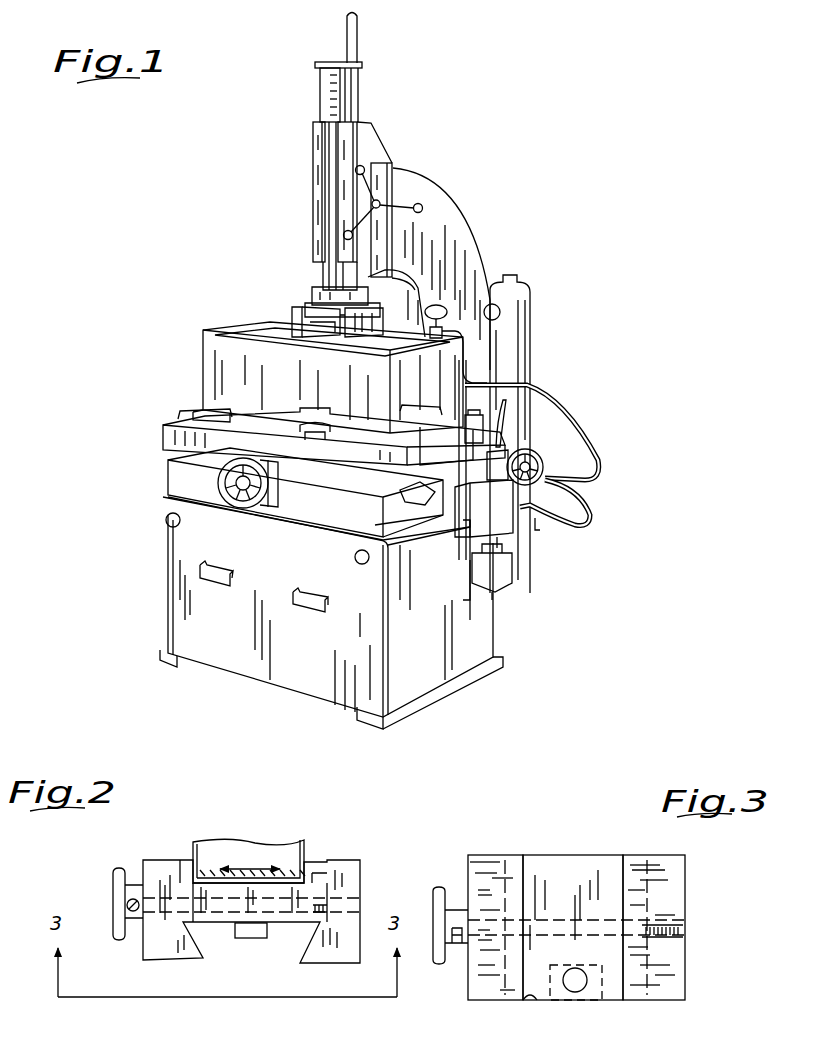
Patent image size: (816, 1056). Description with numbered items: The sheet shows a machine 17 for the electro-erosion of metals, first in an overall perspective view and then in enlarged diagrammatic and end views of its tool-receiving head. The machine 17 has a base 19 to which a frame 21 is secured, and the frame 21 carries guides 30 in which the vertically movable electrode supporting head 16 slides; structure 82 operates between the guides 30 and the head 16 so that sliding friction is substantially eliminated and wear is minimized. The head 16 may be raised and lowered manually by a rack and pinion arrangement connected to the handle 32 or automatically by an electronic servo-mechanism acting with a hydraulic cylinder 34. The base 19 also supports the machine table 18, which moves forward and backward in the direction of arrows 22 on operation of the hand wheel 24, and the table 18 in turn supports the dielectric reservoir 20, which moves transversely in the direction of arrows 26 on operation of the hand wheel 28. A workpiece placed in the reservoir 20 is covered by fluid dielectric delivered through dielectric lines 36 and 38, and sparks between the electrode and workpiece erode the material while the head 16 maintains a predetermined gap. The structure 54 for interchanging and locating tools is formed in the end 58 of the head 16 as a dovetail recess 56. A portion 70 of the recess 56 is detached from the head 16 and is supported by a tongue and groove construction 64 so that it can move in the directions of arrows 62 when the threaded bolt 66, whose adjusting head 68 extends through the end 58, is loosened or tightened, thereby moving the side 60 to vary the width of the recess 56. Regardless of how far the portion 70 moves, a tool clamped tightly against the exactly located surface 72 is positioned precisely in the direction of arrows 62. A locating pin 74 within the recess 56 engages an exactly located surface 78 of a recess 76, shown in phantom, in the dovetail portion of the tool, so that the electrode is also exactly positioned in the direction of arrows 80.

In FIG. 1, the electrode supporting head 16 is at (320, 90).
In FIG. 1, the machine 17 is at (160, 240).
In FIG. 1, the machine table 18 is at (163, 440).
In FIG. 1, the base 19 is at (168, 612).
In FIG. 1, the reservoir 20 is at (203, 358).
In FIG. 1, the frame 21 is at (462, 228).
In FIG. 1, the arrows 22 is at (152, 463).
In FIG. 1, the hand wheel 24 is at (246, 508).
In FIG. 1, the arrows 26 is at (177, 395).
In FIG. 1, the hand wheel 28 is at (580, 450).
In FIG. 1, the guides 30 is at (313, 166).
In FIG. 1, the handle 32 is at (418, 205).
In FIG. 1, the hydraulic cylinder 34 is at (358, 40).
In FIG. 1, the dielectric line 36 is at (548, 400).
In FIG. 1, the dielectric line 38 is at (592, 522).
In FIG. 1, the structure for interchanging and locating tools 54 is at (290, 312).
In FIG. 2, the structure for interchanging and locating tools 54 is at (140, 868).
In FIG. 3, the structure for interchanging and locating tools 54 is at (670, 1003).
In FIG. 2, the dovetail recess 56 is at (210, 925).
In FIG. 3, the dovetail recess 56 is at (535, 860).
In FIG. 2, the end of head 58 is at (172, 962).
In FIG. 3, the end of head 58 is at (495, 927).
In FIG. 2, the side of dovetail recess 60 is at (305, 955).
In FIG. 3, the side of dovetail recess 60 is at (625, 878).
In FIG. 2, the arrows 62 is at (258, 866).
In FIG. 2, the tongue and groove construction 64 is at (322, 860).
In FIG. 2, the threaded bolt 66 is at (180, 858).
In FIG. 3, the threaded bolt 66 is at (660, 937).
In FIG. 2, the adjusting head 68 is at (110, 888).
In FIG. 3, the adjusting head 68 is at (435, 890).
In FIG. 2, the detached portion of dovetail recess 70 is at (362, 880).
In FIG. 3, the detached portion of dovetail recess 70 is at (683, 890).
In FIG. 2, the surface of recess 72 is at (205, 962).
In FIG. 3, the surface of recess 72 is at (528, 1003).
In FIG. 2, the locating pin 74 is at (240, 940).
In FIG. 3, the locating pin 74 is at (566, 992).
In FIG. 3, the recess 76 is at (592, 1005).
In FIG. 3, the surface 78 is at (554, 949).
In FIG. 3, the arrows 80 is at (555, 885).
In FIG. 1, the structure 82 is at (363, 112).